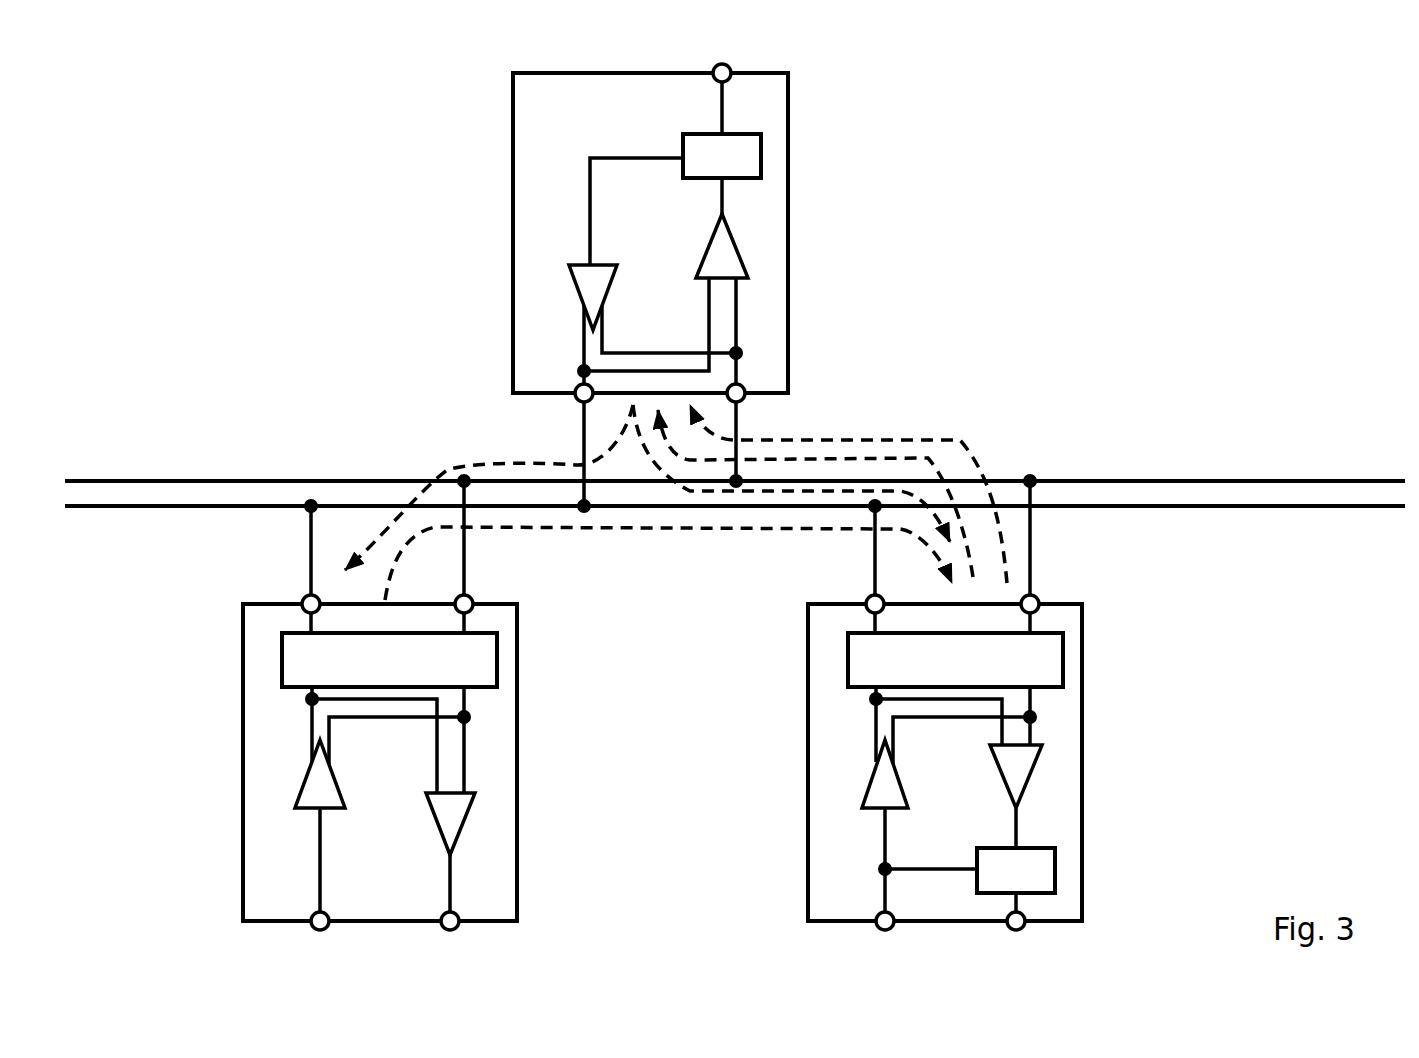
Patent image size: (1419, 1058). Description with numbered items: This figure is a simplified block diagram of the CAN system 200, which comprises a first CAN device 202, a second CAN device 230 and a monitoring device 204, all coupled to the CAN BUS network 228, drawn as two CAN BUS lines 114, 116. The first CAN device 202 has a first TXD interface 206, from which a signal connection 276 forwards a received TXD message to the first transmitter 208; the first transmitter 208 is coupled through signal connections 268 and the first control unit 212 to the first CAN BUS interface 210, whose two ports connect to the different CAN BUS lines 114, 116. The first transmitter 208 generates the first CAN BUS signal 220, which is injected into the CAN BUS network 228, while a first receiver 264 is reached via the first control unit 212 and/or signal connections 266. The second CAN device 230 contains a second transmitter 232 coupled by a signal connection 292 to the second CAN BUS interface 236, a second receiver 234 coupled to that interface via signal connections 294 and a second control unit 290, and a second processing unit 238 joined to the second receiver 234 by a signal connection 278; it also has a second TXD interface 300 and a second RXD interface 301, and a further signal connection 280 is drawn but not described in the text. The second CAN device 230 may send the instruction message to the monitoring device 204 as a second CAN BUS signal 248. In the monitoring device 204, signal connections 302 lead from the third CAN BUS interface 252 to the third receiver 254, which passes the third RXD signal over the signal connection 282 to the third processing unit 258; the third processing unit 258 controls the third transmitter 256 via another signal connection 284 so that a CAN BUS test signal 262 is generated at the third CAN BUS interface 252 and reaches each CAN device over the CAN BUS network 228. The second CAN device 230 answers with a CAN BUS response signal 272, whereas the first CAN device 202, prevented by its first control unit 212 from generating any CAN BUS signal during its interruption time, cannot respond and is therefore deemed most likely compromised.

The CAN system 200 is at (1060, 285).
The monitoring device 204 is at (513, 98).
The third processing unit 258 is at (761, 142).
The signal connection 284 is at (590, 200).
The signal connection 282 is at (724, 195).
The third receiver 254 is at (740, 248).
The third transmitter 256 is at (569, 280).
The signal connections 302 is at (742, 298).
The third CAN BUS interface 252 is at (746, 386).
The CAN BUS network 228 is at (1160, 478).
The CAN BUS line 114 is at (1235, 503).
The CAN BUS line 116 is at (735, 419).
The CAN BUS test signal 262 is at (447, 468).
The second CAN BUS signal 248 is at (932, 453).
The CAN BUS response signal 272 is at (993, 462).
The first CAN BUS signal 220 is at (612, 535).
The first CAN BUS interface 210 is at (478, 604).
The second CAN BUS interface 236 is at (1042, 604).
The second CAN device 230 is at (1084, 605).
The second control unit 290 is at (1063, 650).
The first CAN device 202 is at (243, 662).
The first control unit 212 is at (497, 660).
The signal connections 268 is at (312, 735).
The signal connection 292 is at (876, 730).
The signal connections 294 is at (1032, 730).
The first transmitter 208 is at (302, 785).
The signal connections 266 is at (470, 770).
The second transmitter 232 is at (865, 785).
The second receiver 234 is at (1035, 770).
The signal connection 276 is at (318, 857).
The first receiver 264 is at (462, 835).
The signal connection 278 is at (1022, 830).
The connection line 280 is at (920, 862).
The second processing unit 238 is at (1055, 870).
The first TXD interface 206 is at (300, 907).
The second TXD interface 300 is at (873, 912).
The second RXD interface 301 is at (1030, 913).